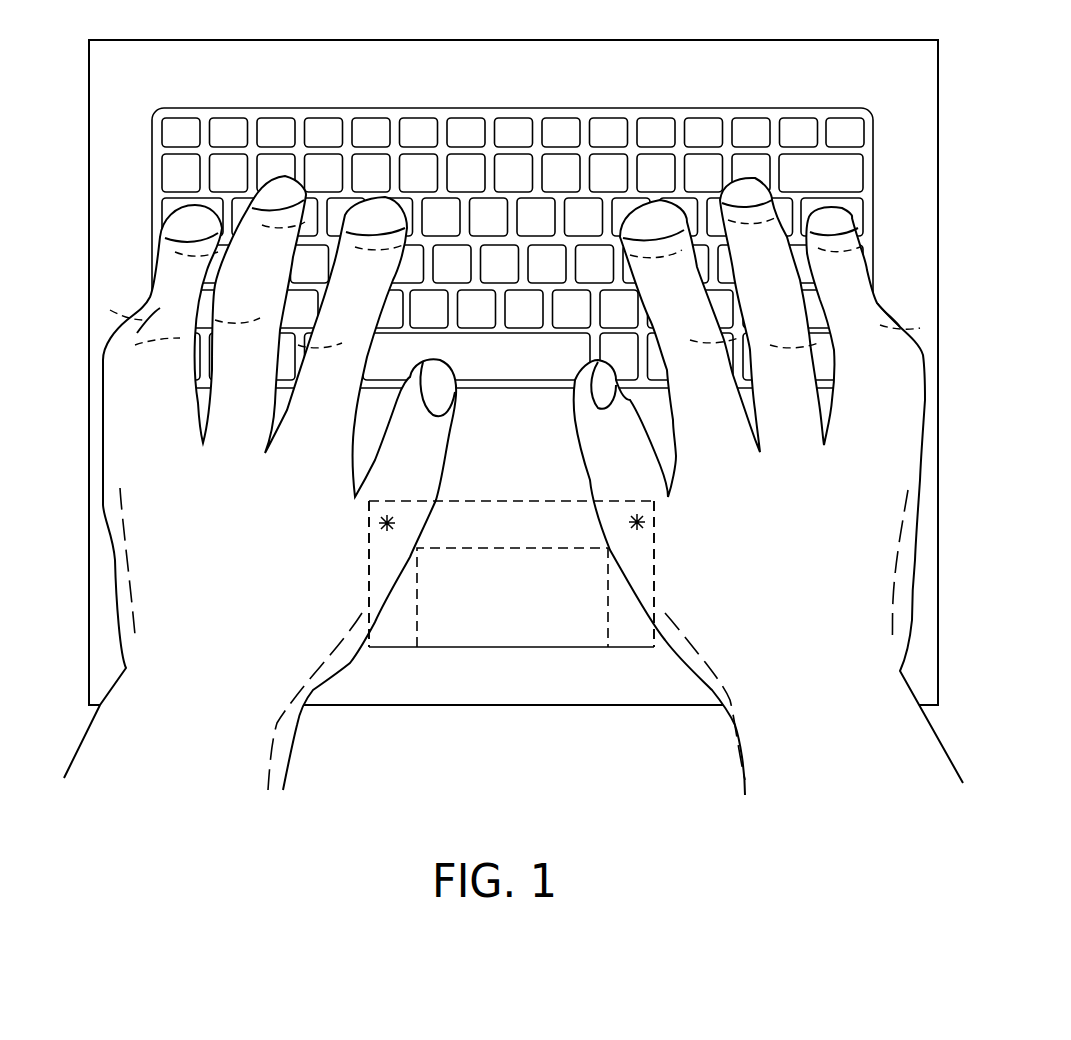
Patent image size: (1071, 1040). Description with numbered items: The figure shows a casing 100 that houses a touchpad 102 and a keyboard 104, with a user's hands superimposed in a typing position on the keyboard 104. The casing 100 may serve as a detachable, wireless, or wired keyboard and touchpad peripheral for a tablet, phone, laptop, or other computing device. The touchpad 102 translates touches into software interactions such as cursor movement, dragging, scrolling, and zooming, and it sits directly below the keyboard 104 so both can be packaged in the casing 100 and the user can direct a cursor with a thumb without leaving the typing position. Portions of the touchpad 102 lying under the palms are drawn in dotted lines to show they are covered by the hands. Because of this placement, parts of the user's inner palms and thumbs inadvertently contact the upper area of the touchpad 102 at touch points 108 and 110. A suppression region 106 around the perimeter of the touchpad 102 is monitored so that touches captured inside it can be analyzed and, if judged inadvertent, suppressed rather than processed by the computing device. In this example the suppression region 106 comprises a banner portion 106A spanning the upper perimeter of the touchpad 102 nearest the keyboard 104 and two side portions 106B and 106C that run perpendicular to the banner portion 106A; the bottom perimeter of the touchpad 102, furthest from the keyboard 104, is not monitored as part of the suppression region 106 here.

The casing 100 is at (180, 38).
The touchpad 102 is at (485, 648).
The keyboard 104 is at (520, 107).
The suppression region 106 is at (628, 638).
The banner portion 106A is at (556, 502).
The side portion 106B is at (418, 595).
The side portion 106C is at (607, 606).
The touch point 108 is at (645, 517).
The touch point 110 is at (380, 518).